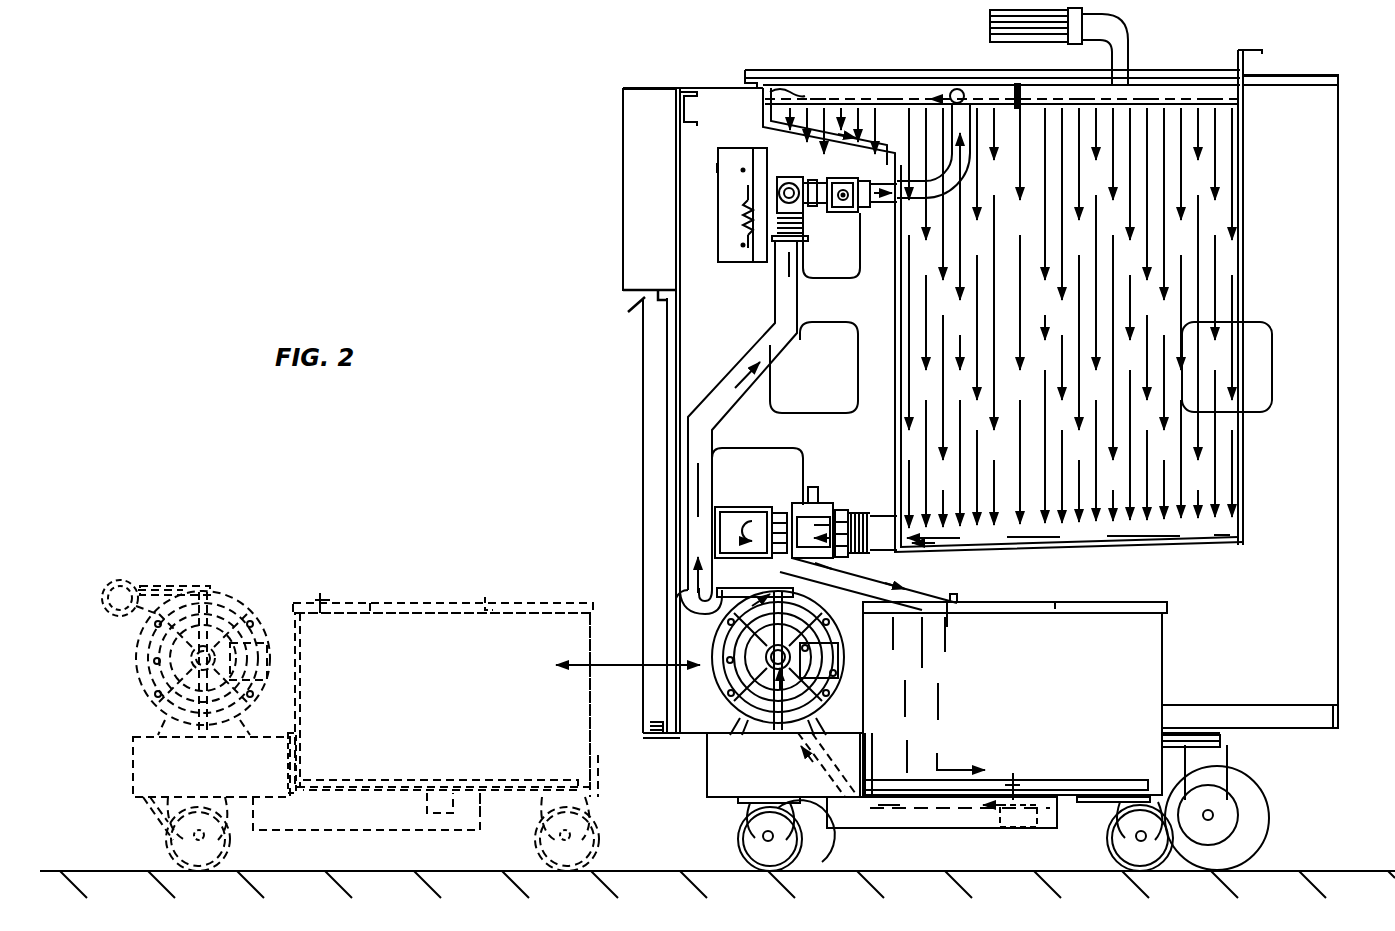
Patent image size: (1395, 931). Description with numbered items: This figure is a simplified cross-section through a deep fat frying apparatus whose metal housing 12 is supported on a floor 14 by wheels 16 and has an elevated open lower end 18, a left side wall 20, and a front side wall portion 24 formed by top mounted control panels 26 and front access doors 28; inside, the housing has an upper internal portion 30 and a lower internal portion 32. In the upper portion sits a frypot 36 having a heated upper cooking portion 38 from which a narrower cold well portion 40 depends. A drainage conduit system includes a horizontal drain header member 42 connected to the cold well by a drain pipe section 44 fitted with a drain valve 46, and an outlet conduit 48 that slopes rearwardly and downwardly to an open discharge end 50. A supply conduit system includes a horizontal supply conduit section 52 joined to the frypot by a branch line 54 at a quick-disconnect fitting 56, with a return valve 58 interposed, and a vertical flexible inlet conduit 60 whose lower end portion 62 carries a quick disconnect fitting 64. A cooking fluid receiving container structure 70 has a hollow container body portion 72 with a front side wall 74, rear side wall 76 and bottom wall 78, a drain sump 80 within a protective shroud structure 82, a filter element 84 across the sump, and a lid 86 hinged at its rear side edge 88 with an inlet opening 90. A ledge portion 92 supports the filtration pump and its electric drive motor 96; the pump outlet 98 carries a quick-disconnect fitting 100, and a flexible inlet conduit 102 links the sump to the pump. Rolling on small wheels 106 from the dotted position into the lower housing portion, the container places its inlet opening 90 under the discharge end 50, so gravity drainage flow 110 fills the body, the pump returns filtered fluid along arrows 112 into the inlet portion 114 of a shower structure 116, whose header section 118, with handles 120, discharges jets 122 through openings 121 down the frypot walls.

The metal housing 12 is at (1347, 283).
The floor 14 is at (93, 870).
The wheels 16 is at (1270, 832).
The open lower end 18 is at (1300, 735).
The left side wall 20 is at (1300, 565).
The front side wall portion 24 is at (635, 385).
The control panels 26 is at (635, 148).
The front access doors 28 is at (650, 508).
The upper internal portion 30 is at (1305, 192).
The lower internal portion 32 is at (1308, 614).
The frypots 36 is at (895, 298).
The upper cooking portion 38 is at (1245, 146).
The cold well portion 40 is at (1243, 498).
The drain header member 42 is at (730, 507).
The drain pipe sections 44 is at (886, 512).
The drain valves 46 is at (822, 503).
The outlet conduit 48 is at (892, 582).
The open discharge end 50 is at (948, 622).
The horizontal supply conduit section 52 is at (784, 164).
The supply conduit branch lines 54 is at (878, 183).
The quick-disconnect fittings 56 is at (925, 205).
The return valves 58 is at (848, 212).
The flexible inlet conduit 60 is at (770, 338).
The lower end portion 62 is at (688, 540).
The quick disconnect fitting 64 is at (688, 614).
The cooking fluid receiving container structure 70 is at (1166, 672).
The container body portion 72 is at (1057, 725).
The front side wall 74 is at (865, 718).
The rear side wall 76 is at (1165, 650).
The bottom wall 78 is at (868, 776).
The drain sump 80 is at (1035, 830).
The protective shroud structure 82 is at (916, 830).
The cooking fluid filter element 84 is at (1098, 776).
The lid 86 is at (1055, 603).
The rear side edge 88 is at (1165, 603).
The inlet opening 90 is at (948, 598).
The ledge portion 92 is at (707, 775).
The electric drive motor 96 is at (716, 630).
The pump outlet 98 is at (798, 586).
The quick-disconnect fitting 100 is at (680, 600).
The flexible inlet conduit 102 is at (810, 777).
The small wheels 106 is at (1160, 870).
The gravity drainage flow 110 is at (935, 547).
The arrows 112 is at (745, 375).
The inlet portion 114 is at (967, 140).
The cooking fluid shower structure 116 is at (783, 88).
The header section 118 is at (882, 86).
The handles 120 is at (1085, 18).
The discharge openings 121 is at (795, 94).
The cooking fluid jets 122 is at (990, 320).